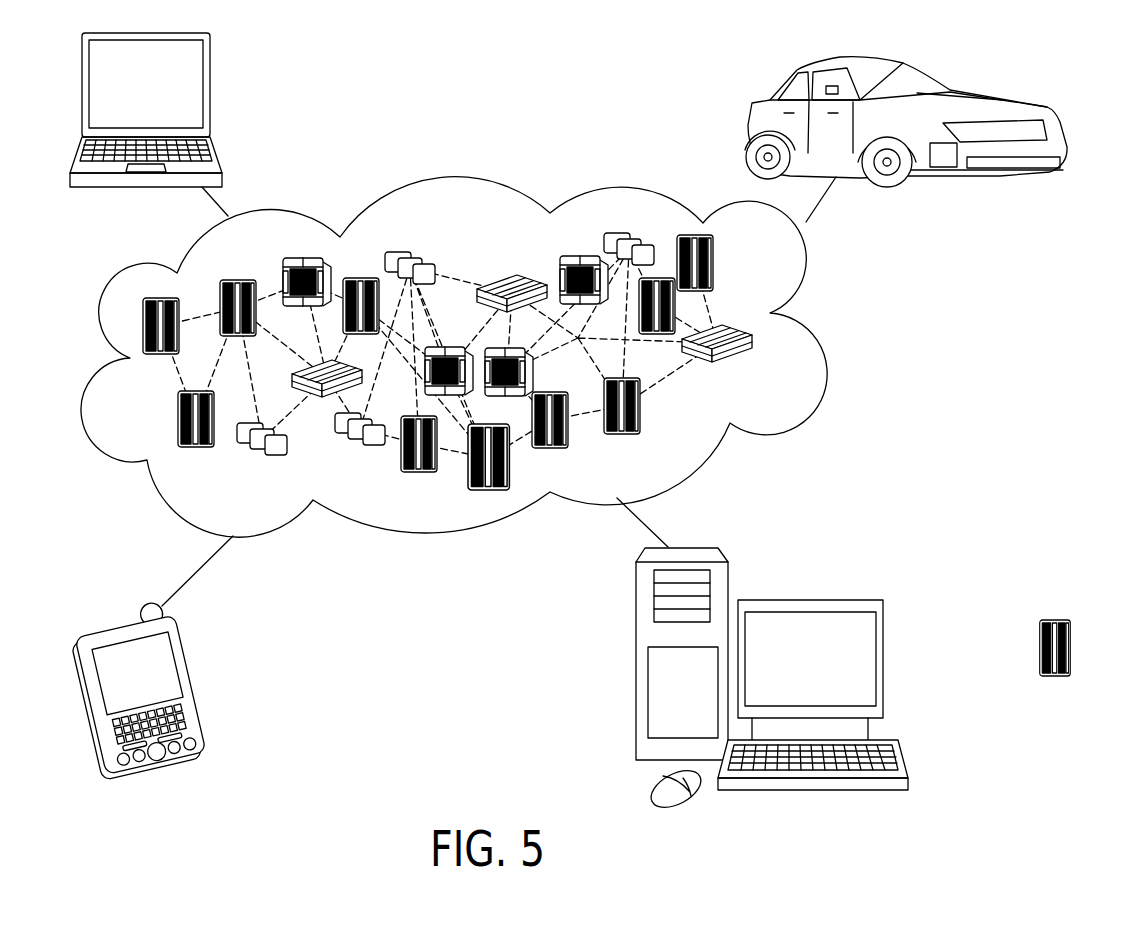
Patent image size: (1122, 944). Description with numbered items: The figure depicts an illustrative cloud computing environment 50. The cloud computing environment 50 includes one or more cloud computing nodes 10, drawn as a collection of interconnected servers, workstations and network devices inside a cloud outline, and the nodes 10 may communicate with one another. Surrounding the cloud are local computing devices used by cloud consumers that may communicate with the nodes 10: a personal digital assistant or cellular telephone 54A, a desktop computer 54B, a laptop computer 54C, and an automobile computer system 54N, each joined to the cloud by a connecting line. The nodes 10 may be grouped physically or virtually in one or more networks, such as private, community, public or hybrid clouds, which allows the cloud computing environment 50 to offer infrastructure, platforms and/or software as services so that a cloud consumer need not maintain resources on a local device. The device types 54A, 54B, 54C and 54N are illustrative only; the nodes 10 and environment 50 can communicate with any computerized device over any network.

The cloud computing environment 50 is at (826, 351).
The cloud computing nodes 10 is at (776, 371).
The personal digital assistant or cellular telephone 54A is at (196, 686).
The desktop computer 54B is at (843, 600).
The laptop computer 54C is at (210, 100).
The automobile computer system 54N is at (963, 83).